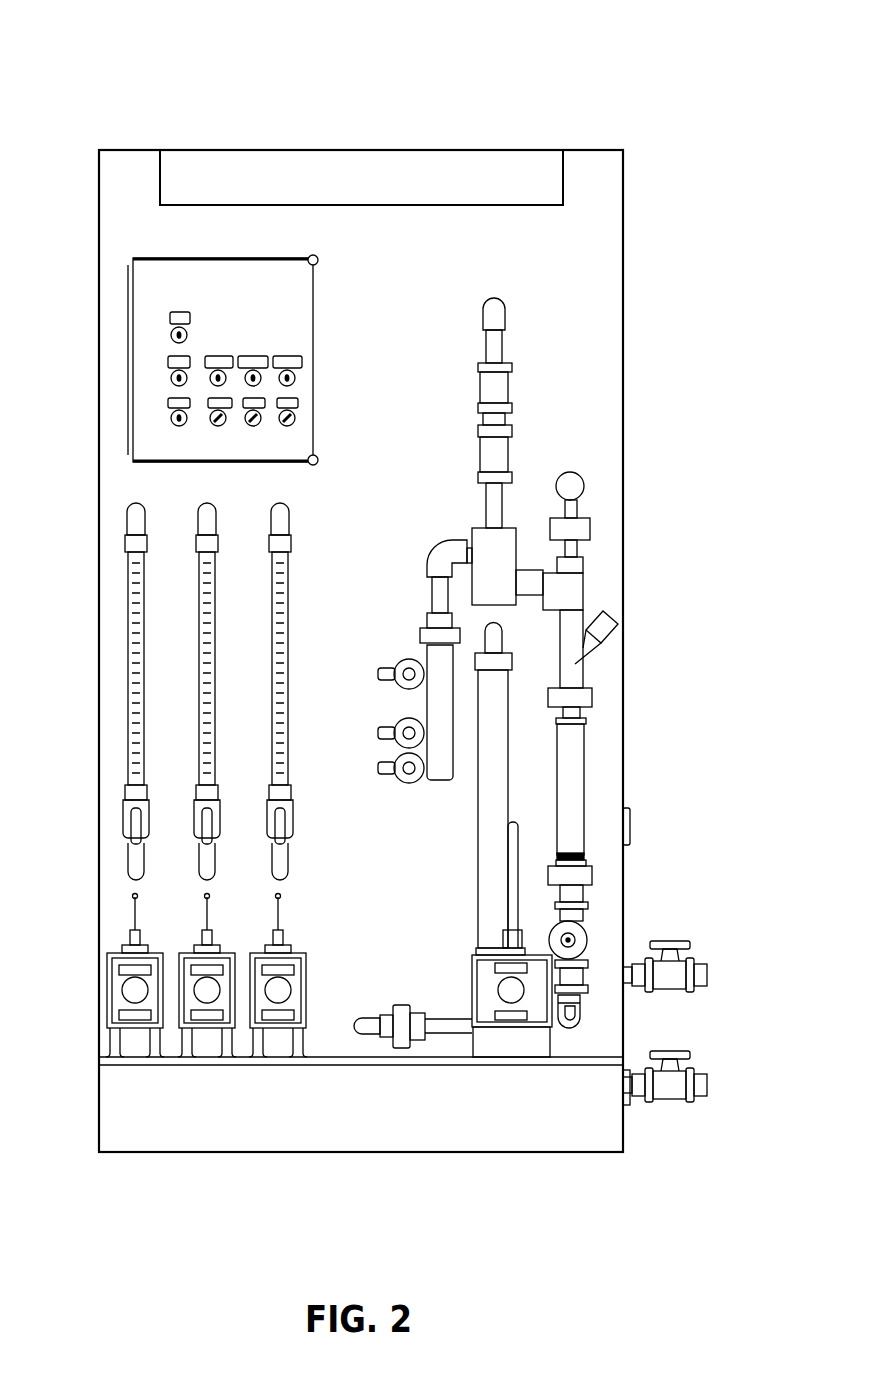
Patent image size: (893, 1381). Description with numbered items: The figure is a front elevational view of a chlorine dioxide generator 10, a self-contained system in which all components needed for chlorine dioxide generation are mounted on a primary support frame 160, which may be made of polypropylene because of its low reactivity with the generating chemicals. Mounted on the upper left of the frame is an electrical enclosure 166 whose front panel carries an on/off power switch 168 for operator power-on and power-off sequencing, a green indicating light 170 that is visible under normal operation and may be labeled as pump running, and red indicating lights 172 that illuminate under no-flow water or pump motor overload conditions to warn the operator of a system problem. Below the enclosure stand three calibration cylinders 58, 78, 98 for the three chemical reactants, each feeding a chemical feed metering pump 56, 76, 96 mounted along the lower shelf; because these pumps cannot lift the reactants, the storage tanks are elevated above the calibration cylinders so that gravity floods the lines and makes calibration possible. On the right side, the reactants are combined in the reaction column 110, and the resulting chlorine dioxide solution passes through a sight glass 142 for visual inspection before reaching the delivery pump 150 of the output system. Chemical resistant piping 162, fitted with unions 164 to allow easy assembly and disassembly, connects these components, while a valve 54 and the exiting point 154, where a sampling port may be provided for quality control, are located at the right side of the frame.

The chlorine dioxide generator 10 is at (692, 72).
The primary support frame 160 is at (613, 240).
The electrical enclosure 166 is at (155, 322).
The on/off power switch 168 is at (172, 335).
The green indicating light 170 is at (296, 418).
The red indicating lights 172 is at (263, 418).
The calibration cylinder 58 is at (130, 578).
The calibration cylinder 78 is at (207, 636).
The calibration cylinder 98 is at (280, 678).
The chemical feed metering pump 56 is at (118, 1005).
The chemical feed metering pump 76 is at (207, 1010).
The chemical feed metering pump 96 is at (278, 1010).
The sight glass 142 is at (505, 387).
The reaction column 110 is at (535, 548).
The unions 164 is at (442, 552).
The piping 162 is at (440, 598).
The delivery pump 150 is at (540, 1012).
The exiting point 154 is at (722, 973).
The valve 54 is at (722, 1083).